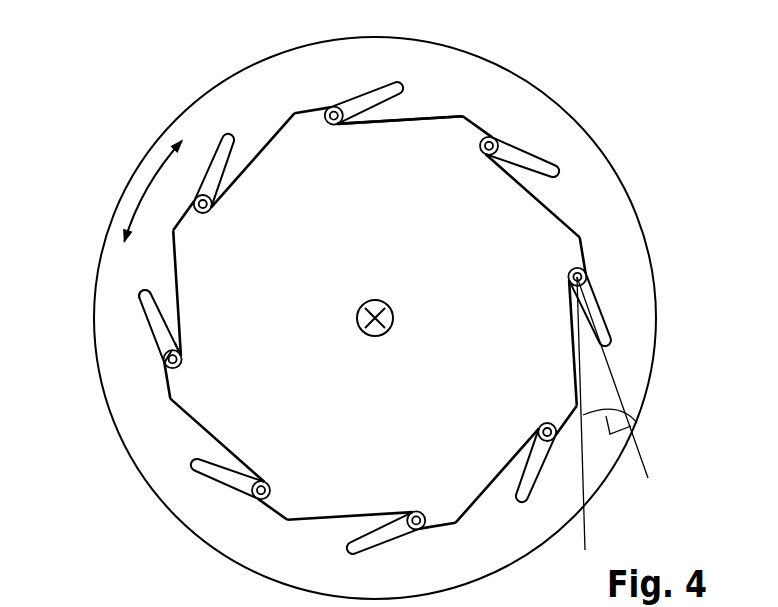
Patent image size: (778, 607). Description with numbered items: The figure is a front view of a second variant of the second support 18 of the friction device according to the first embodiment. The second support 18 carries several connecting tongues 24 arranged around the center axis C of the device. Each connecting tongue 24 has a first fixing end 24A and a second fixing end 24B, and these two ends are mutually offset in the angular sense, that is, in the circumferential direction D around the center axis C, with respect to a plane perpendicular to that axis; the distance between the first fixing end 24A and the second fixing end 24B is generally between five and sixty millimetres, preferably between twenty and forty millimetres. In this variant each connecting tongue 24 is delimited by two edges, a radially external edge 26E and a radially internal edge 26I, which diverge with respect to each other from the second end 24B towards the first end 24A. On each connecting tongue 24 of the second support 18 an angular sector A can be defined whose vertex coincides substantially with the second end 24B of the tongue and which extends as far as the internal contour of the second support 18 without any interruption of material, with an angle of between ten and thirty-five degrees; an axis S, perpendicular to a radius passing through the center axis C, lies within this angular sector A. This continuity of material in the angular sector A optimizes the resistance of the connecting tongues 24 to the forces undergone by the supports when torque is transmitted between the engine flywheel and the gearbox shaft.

The second support 18 is at (240, 102).
The connecting tongue 24 is at (372, 108).
The first fixing end 24A is at (425, 100).
The second fixing end 24B is at (345, 126).
The radially external edge 26E is at (148, 323).
The radially internal edge 26I is at (185, 321).
The center axis C is at (390, 322).
The circumferential direction D is at (140, 190).
The angular sector A is at (637, 423).
The axis S is at (587, 523).